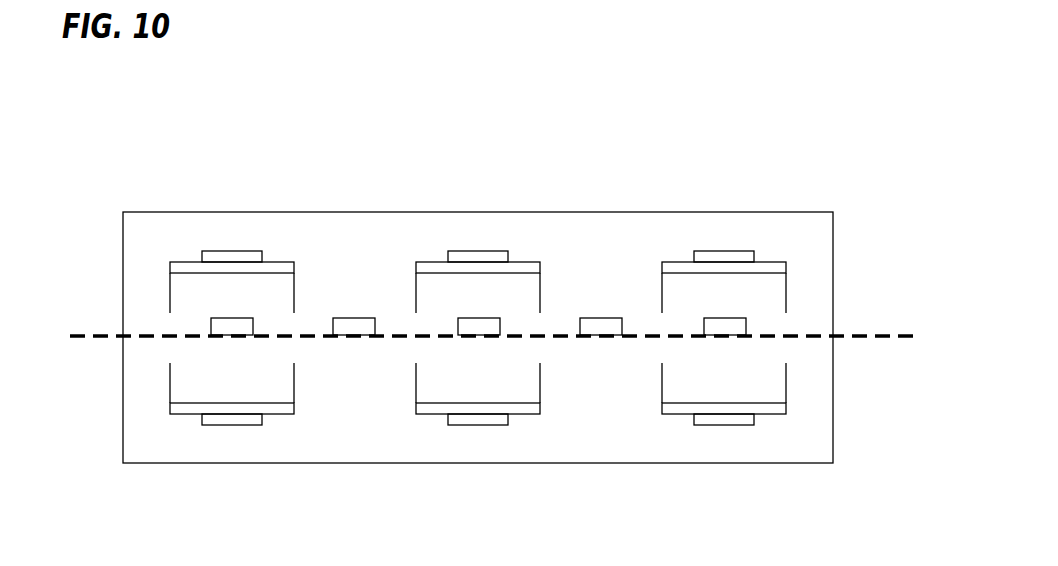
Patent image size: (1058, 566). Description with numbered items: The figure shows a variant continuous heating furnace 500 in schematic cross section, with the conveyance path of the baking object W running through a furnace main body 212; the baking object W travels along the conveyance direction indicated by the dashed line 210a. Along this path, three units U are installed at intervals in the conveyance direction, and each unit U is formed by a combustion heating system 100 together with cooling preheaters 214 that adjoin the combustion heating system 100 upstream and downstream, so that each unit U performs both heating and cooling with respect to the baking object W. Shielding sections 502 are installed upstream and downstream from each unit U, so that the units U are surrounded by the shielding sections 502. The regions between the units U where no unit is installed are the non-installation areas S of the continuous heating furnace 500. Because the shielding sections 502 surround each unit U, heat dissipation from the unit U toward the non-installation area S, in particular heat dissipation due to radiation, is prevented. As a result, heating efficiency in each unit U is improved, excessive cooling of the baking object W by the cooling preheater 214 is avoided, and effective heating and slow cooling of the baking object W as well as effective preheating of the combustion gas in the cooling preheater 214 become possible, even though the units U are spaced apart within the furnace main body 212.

The continuous heating furnace 500 is at (835, 210).
The furnace main body 212 is at (143, 212).
The cutting line 210a is at (80, 337).
The unit U is at (482, 338).
The cooling preheater 214 is at (193, 263).
The combustion heating system 100 is at (229, 259).
The shielding section 502 is at (170, 288).
The baking object W is at (234, 325).
The non-installation area S is at (586, 240).